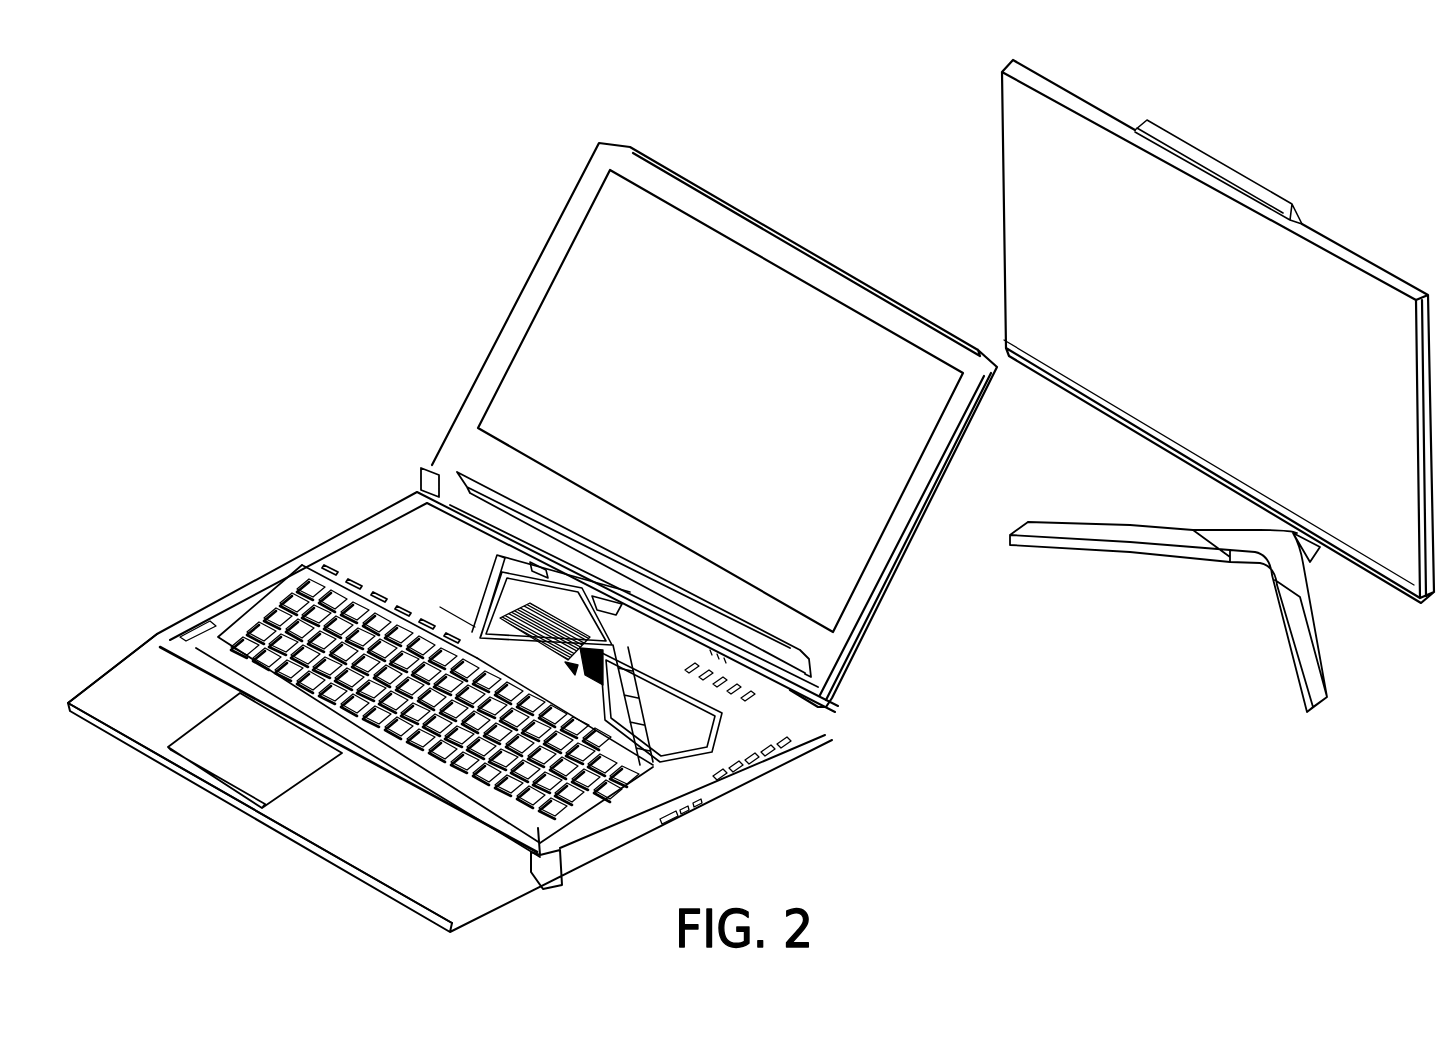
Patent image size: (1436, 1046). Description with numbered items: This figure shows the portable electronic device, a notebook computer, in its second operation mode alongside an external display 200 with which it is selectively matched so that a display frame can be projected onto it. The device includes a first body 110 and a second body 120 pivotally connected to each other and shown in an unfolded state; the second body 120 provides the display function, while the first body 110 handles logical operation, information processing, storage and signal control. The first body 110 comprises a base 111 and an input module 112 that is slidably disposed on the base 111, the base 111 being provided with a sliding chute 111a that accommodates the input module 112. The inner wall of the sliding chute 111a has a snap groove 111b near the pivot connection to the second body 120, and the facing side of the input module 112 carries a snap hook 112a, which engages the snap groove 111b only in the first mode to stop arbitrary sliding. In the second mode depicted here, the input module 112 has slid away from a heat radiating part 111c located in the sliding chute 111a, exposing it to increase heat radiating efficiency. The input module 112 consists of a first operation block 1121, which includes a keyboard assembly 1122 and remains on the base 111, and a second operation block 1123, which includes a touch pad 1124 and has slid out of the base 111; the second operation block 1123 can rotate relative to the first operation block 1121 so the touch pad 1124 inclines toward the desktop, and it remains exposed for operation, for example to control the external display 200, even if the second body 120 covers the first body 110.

The first body 110 is at (337, 188).
The base 111 is at (613, 897).
The sliding chute 111a is at (457, 615).
The snap groove 111b is at (540, 562).
The heat radiating part 111c is at (622, 662).
The input module 112 is at (360, 584).
The snap hook 112a is at (378, 536).
The first operation block 1121 is at (250, 603).
The keyboard assembly 1122 is at (290, 603).
The second operation block 1123 is at (157, 692).
The touch pad 1124 is at (267, 753).
The second body 120 is at (631, 249).
The external display 200 is at (1394, 618).